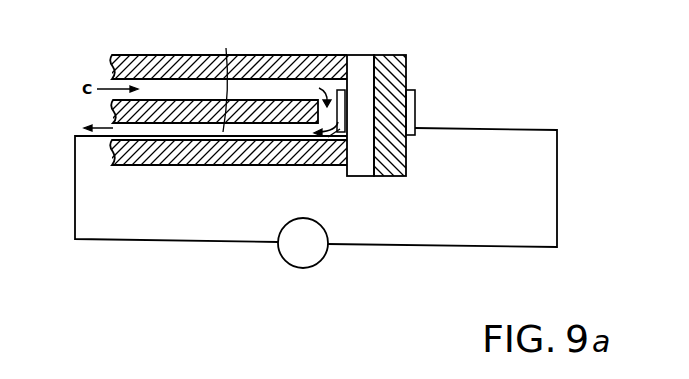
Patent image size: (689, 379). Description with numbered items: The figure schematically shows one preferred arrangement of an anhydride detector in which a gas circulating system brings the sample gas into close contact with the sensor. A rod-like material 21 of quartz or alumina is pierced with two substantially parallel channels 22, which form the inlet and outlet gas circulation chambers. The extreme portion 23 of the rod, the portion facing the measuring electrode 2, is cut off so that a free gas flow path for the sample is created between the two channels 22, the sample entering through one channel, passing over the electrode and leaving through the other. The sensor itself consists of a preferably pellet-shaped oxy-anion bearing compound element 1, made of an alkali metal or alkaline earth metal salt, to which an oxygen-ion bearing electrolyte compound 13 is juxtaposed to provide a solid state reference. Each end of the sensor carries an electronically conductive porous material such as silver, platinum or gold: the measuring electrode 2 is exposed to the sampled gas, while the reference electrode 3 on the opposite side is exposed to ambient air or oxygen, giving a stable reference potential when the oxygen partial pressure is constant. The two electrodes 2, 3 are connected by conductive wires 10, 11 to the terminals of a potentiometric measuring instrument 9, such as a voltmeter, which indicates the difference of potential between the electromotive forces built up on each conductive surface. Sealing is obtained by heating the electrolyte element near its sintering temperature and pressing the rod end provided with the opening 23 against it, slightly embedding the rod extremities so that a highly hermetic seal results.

The oxy-anion bearing compound element 1 is at (362, 163).
The measuring electrode 2 is at (332, 146).
The reference electrode 3 is at (416, 111).
The potentiometric measuring instrument 9 is at (320, 251).
The conductive wire 10 is at (557, 191).
The conductive wire 11 is at (75, 189).
The oxygen-ion bearing electrolyte compound 13 is at (388, 170).
The rod-like material 21 is at (309, 43).
The channels 22 is at (213, 88).
The extreme portion (opening) of the rod 23 is at (332, 96).